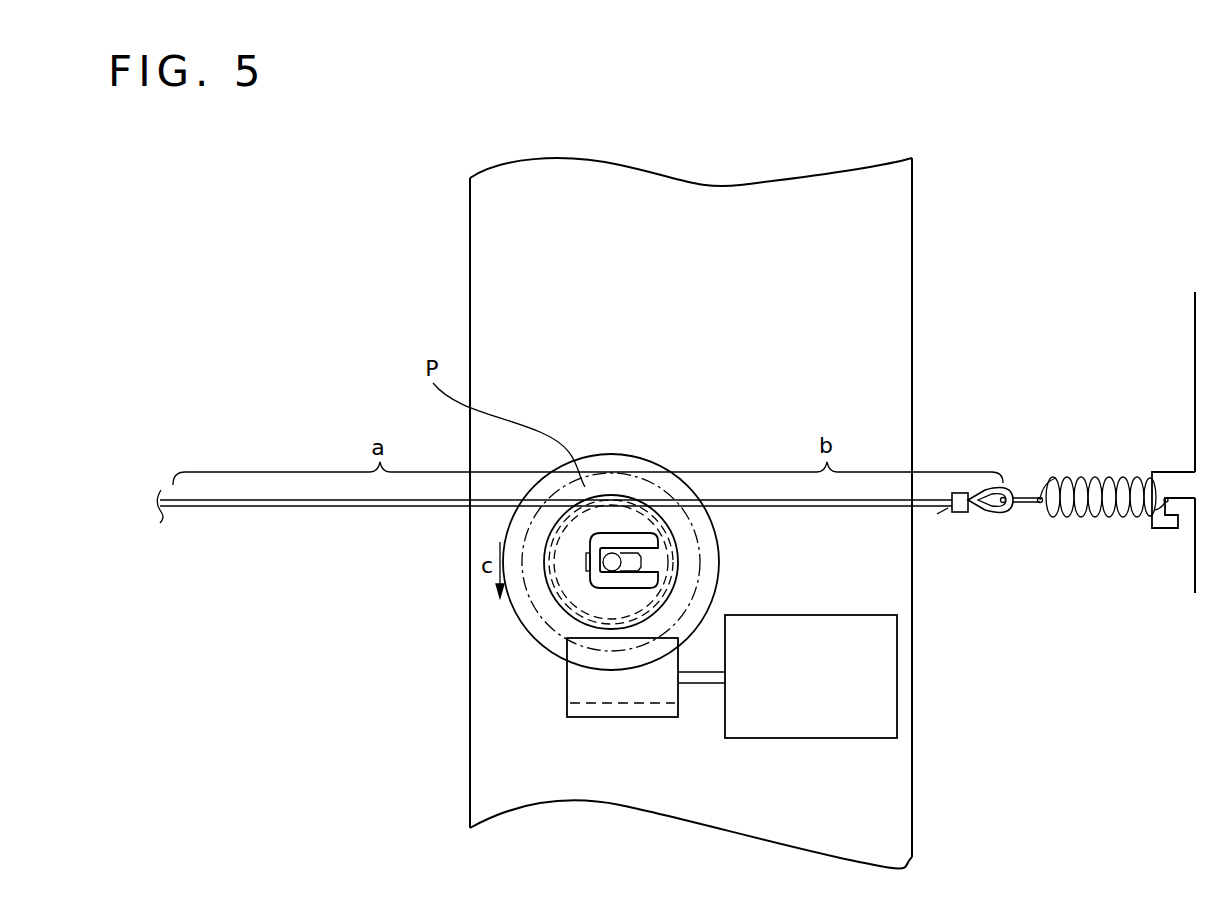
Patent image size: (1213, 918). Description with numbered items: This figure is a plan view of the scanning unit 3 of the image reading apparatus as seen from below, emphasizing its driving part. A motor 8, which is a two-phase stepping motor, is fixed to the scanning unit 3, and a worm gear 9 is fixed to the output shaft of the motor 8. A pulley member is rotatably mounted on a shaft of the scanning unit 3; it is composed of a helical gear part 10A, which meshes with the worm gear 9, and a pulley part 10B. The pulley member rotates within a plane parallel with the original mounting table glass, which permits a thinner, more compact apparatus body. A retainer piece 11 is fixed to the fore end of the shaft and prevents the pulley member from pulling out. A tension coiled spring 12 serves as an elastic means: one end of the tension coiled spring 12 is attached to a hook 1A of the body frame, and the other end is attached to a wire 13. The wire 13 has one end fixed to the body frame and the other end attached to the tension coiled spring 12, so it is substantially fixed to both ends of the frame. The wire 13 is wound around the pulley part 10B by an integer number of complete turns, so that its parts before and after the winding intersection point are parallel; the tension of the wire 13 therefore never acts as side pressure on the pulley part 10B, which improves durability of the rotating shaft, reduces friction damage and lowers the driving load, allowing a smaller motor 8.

The scanning unit 3 is at (878, 257).
The wire 13 is at (260, 508).
The helical gear part 10A is at (715, 566).
The pulley part 10B is at (545, 597).
The retainer piece 11 is at (607, 537).
The worm gear 9 is at (568, 697).
The motor 8 is at (885, 683).
The tension coiled spring 12 is at (1092, 520).
The hook 1A is at (1170, 480).